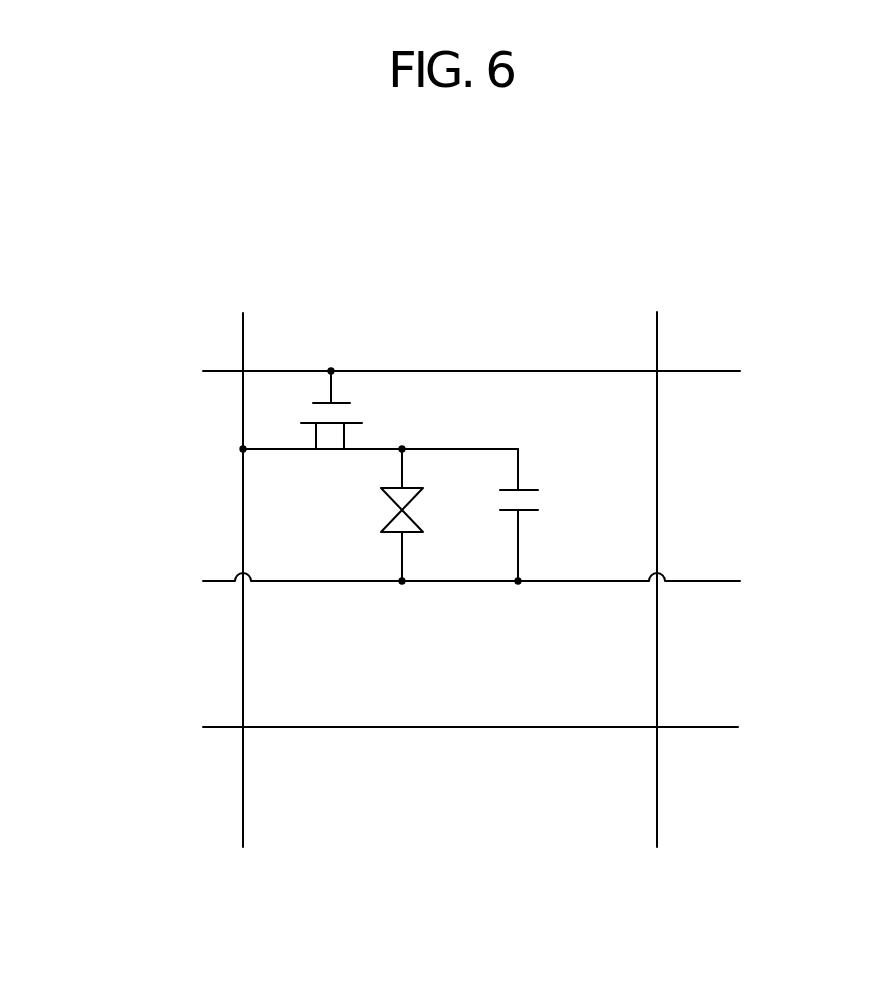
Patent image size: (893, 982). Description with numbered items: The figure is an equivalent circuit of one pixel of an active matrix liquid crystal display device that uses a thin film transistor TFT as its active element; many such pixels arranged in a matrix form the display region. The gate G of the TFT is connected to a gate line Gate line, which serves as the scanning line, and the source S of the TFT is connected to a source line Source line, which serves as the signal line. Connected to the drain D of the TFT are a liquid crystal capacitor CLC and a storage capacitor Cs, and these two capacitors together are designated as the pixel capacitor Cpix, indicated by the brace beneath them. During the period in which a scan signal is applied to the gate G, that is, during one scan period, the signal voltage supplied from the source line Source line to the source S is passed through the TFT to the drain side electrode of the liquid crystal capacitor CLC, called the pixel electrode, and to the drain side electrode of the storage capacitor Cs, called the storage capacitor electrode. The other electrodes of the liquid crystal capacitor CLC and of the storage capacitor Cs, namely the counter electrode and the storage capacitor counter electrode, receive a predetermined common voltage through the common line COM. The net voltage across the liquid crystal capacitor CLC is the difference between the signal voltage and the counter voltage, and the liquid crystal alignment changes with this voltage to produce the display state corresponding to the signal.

The thin film transistor TFT is at (370, 390).
The gate G is at (333, 390).
The source S is at (278, 452).
The drain D is at (353, 452).
The liquid crystal capacitor CLC is at (378, 563).
The storage capacitor Cs is at (485, 533).
The pixel capacitor Cpix is at (413, 582).
The storage capacitor counter electrode line COM is at (725, 581).
The gate line Gate line is at (583, 371).
The source line Source line is at (243, 540).